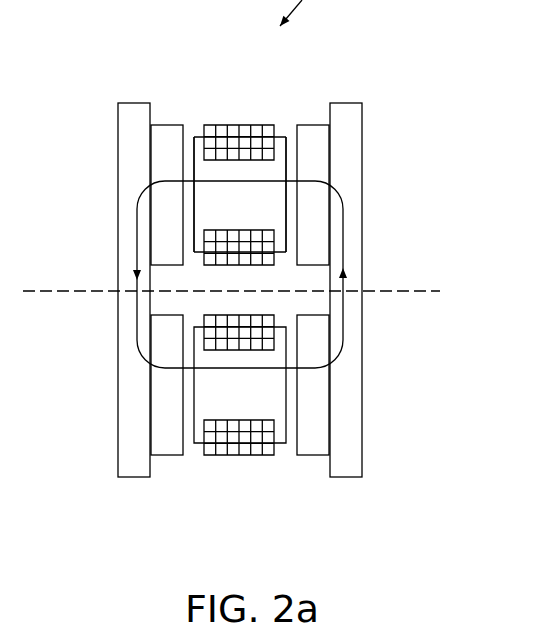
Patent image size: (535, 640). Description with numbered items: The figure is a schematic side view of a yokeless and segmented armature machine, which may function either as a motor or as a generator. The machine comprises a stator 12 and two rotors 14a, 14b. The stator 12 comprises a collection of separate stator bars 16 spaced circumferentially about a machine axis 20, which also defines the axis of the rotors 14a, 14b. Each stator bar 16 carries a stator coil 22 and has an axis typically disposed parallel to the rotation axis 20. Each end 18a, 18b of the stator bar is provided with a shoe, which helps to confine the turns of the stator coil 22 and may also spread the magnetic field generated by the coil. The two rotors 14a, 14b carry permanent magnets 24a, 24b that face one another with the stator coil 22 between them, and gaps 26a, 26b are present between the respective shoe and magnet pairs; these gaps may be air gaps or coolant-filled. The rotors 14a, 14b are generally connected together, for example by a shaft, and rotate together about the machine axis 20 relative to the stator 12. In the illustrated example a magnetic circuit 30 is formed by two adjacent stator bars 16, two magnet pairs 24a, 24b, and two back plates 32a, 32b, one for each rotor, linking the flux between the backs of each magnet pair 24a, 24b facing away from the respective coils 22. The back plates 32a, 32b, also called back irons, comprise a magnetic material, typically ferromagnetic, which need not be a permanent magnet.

The stator 12 is at (228, 467).
The rotor 14a is at (133, 477).
The rotor 14b is at (343, 477).
The stator bar 16 is at (245, 171).
The end of stator bar 18a is at (193, 130).
The end of stator bar 18b is at (286, 132).
The machine axis 20 is at (80, 288).
The stator coil 22 is at (216, 125).
The permanent magnet 24a is at (163, 222).
The permanent magnet 24b is at (312, 235).
The gap 26a is at (187, 132).
The gap 26b is at (290, 152).
The magnetic circuit 30 is at (345, 330).
The back plate 32a is at (132, 443).
The back plate 32b is at (347, 442).